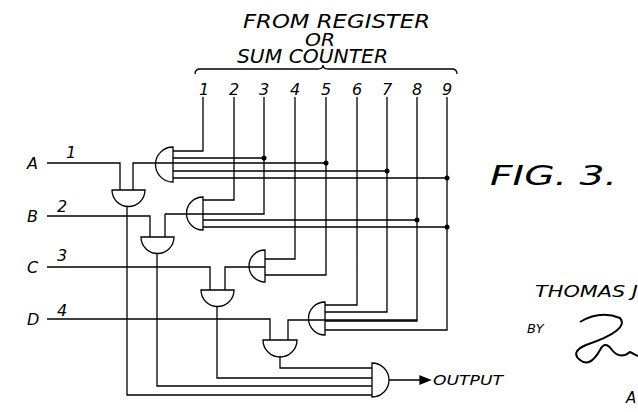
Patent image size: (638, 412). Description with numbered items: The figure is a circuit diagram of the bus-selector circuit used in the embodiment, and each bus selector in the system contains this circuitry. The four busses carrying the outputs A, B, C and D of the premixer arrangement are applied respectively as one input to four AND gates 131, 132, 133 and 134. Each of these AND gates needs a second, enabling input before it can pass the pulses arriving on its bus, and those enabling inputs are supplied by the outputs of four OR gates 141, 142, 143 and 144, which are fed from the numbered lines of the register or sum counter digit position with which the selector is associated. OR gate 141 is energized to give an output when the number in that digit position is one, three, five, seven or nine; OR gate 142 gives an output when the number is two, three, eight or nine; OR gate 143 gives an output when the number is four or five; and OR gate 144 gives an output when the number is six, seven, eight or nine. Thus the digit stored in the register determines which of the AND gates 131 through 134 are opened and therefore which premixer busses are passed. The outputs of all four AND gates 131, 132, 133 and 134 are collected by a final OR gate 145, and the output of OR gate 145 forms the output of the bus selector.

The AND gate 131 is at (112, 193).
The AND gate 132 is at (176, 244).
The AND gate 133 is at (202, 296).
The AND gate 134 is at (266, 353).
The OR gate 141 is at (165, 148).
The OR gate 142 is at (187, 204).
The OR gate 143 is at (250, 255).
The OR gate 144 is at (307, 311).
The OR gate 145 is at (393, 358).